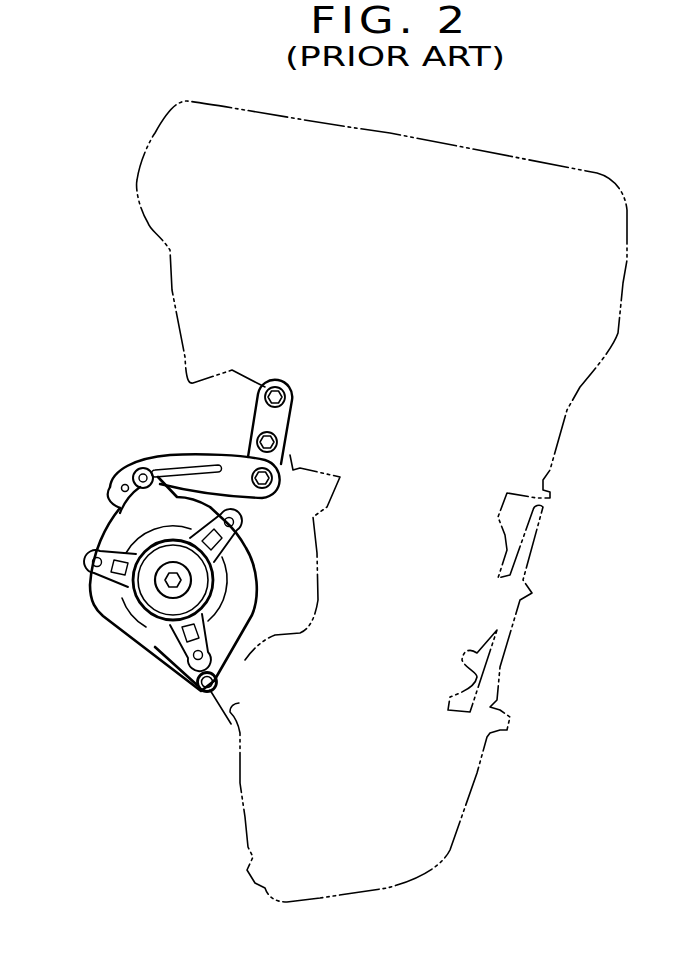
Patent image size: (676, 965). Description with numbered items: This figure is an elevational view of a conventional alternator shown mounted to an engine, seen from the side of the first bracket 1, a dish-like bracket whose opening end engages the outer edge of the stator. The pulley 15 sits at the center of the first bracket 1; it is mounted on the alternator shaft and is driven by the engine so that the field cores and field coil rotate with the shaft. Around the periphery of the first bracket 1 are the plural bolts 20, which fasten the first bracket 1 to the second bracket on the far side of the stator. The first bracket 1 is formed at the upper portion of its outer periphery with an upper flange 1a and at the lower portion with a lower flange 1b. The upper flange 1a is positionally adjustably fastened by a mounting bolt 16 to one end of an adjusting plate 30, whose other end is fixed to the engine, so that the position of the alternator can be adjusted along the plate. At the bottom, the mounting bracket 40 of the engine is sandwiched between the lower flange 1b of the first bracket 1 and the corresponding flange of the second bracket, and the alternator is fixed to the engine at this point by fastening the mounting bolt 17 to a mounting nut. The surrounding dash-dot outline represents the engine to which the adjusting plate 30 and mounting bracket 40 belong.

The first bracket 1 is at (98, 613).
The upper flange 1a is at (137, 502).
The lower flange 1b is at (178, 674).
The pulley 15 is at (155, 602).
The mounting bolt 16 is at (143, 468).
The mounting bolt 17 is at (200, 692).
The bolts 20 is at (92, 563).
The adjusting plate 30 is at (186, 455).
The mounting bracket 40 is at (218, 735).